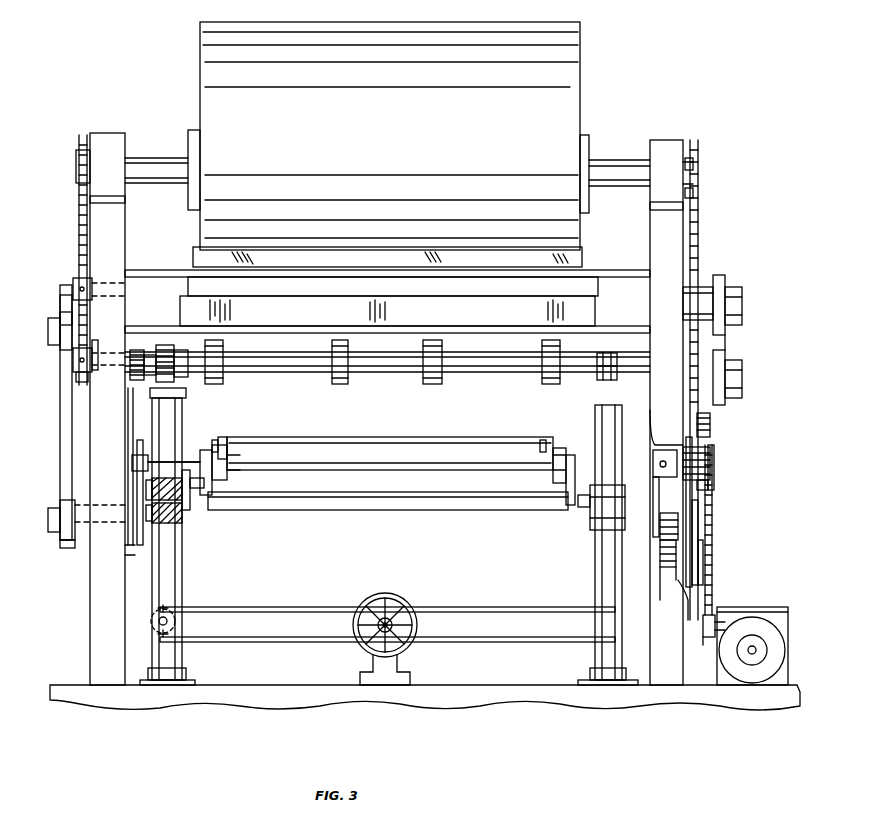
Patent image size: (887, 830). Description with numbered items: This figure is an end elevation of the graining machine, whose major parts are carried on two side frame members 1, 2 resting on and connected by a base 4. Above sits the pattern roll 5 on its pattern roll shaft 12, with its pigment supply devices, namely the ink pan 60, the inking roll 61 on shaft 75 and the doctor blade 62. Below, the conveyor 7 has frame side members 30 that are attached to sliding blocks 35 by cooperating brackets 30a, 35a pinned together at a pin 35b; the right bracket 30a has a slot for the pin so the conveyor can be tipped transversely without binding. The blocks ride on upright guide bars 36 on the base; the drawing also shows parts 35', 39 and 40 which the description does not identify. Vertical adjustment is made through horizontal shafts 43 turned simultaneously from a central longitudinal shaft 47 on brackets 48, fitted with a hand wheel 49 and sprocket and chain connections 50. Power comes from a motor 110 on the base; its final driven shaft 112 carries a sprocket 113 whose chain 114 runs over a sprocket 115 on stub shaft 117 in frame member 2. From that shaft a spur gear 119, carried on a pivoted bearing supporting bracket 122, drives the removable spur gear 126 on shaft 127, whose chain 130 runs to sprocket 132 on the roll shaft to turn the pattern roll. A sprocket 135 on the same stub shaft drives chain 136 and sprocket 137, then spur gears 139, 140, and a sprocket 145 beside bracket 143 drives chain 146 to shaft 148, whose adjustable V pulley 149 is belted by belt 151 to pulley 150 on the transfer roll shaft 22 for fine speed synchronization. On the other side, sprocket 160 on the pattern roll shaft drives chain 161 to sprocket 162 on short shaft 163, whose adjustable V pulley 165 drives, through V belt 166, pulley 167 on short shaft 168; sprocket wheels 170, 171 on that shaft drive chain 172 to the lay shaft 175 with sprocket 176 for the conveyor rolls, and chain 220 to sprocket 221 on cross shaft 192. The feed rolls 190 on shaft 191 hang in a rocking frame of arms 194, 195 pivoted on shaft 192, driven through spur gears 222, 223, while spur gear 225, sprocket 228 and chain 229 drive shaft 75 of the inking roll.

The side frame member 1 is at (100, 607).
The side frame member 2 is at (663, 690).
The base 4 is at (197, 700).
The pattern roll 5 is at (567, 75).
The conveyor 7 is at (362, 503).
The pattern roll shaft 12 is at (605, 160).
The transfer roll shaft 22 is at (700, 290).
The conveyor frame side member 30 is at (220, 445).
The bracket 30a is at (204, 450).
The sliding block 35 is at (592, 520).
The bearing block lug 35' is at (140, 528).
The bracket 35a is at (186, 520).
The pin 35b is at (186, 498).
The upright guide bar 36 is at (178, 568).
The post cap 39 is at (186, 392).
The guide 40 is at (186, 512).
The horizontal shaft 43 is at (152, 610).
The longitudinally extending shaft 47 is at (398, 600).
The bracket 48 is at (392, 670).
The hand wheel 49 is at (370, 598).
The sprocket and chain connections 50 is at (250, 607).
The ink pan 60 is at (593, 316).
The inking roll 61 is at (590, 285).
The doctor blade 62 is at (196, 258).
The shaft 75 is at (142, 272).
The motor 110 is at (752, 646).
The final driven shaft 112 is at (718, 612).
The sprocket 113 is at (706, 638).
The sprocket chain 114 is at (713, 545).
The sprocket 115 is at (712, 468).
The stub shaft 117 is at (656, 480).
The spur gear 119 is at (708, 490).
The pivoted bearing supporting bracket 122 is at (710, 450).
The spur gear 126 is at (712, 425).
The shaft 127 is at (683, 428).
The sprocket chain 130 is at (699, 228).
The sprocket 132 is at (700, 140).
The sprocket 135 is at (662, 450).
The chain 136 is at (660, 530).
The sprocket 137 is at (660, 557).
The spur gear 139 is at (692, 506).
The spur gear 140 is at (660, 575).
The bracket 143 is at (702, 582).
The sprocket 145 is at (688, 610).
The chain 146 is at (698, 530).
The shaft 148 is at (730, 340).
The adjustable V pulley 149 is at (742, 368).
The adjustable V pulley 150 is at (728, 280).
The belt 151 is at (725, 338).
The sprocket 160 is at (82, 135).
The chain 161 is at (78, 215).
The sprocket 162 is at (133, 350).
The short shaft 163 is at (56, 325).
The adjustable V pulley 165 is at (62, 305).
The V belt 166 is at (64, 436).
The adjustable V pulley 167 is at (60, 544).
The short shaft 168 is at (66, 518).
The sprocket wheel 170 is at (130, 548).
The sprocket wheel 171 is at (135, 555).
The chain 172 is at (130, 440).
The lay shaft 175 is at (132, 462).
The sprocket 176 is at (232, 440).
The feed rolls 190 is at (545, 378).
The shaft 191 is at (365, 378).
The cross bar or shaft 192 is at (258, 374).
The arm 194 is at (168, 346).
The arm 195 is at (608, 352).
The sprocket chain 220 is at (130, 410).
The sprocket 221 is at (128, 345).
The spur gear 222 is at (80, 380).
The spur gear 223 is at (124, 292).
The spur gear 225 is at (80, 372).
The sprocket 228 is at (70, 358).
The chain 229 is at (75, 280).